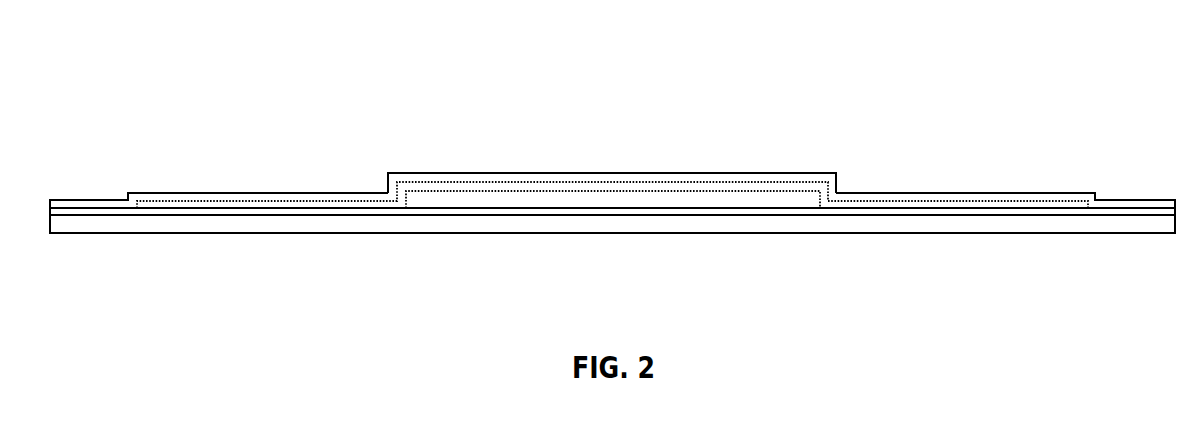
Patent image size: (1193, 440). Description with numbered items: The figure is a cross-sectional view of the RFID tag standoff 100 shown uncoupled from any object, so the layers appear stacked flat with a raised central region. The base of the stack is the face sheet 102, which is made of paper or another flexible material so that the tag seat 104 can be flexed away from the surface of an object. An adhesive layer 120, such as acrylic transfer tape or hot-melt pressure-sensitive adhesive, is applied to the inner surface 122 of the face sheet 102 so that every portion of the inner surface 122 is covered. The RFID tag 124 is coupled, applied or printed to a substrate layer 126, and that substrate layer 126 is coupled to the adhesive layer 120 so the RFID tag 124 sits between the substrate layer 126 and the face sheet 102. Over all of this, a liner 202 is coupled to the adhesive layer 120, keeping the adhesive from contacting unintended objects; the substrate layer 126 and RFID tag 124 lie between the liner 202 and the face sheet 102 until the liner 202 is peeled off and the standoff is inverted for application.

The RFID tag standoff 100 is at (235, 59).
The face sheet 102 is at (427, 223).
The tag seat 104 is at (668, 234).
The adhesive layer 120 is at (513, 209).
The inner surface 122 is at (165, 215).
The RFID tag 124 is at (740, 200).
The substrate layer 126 is at (625, 188).
The liner 202 is at (488, 175).